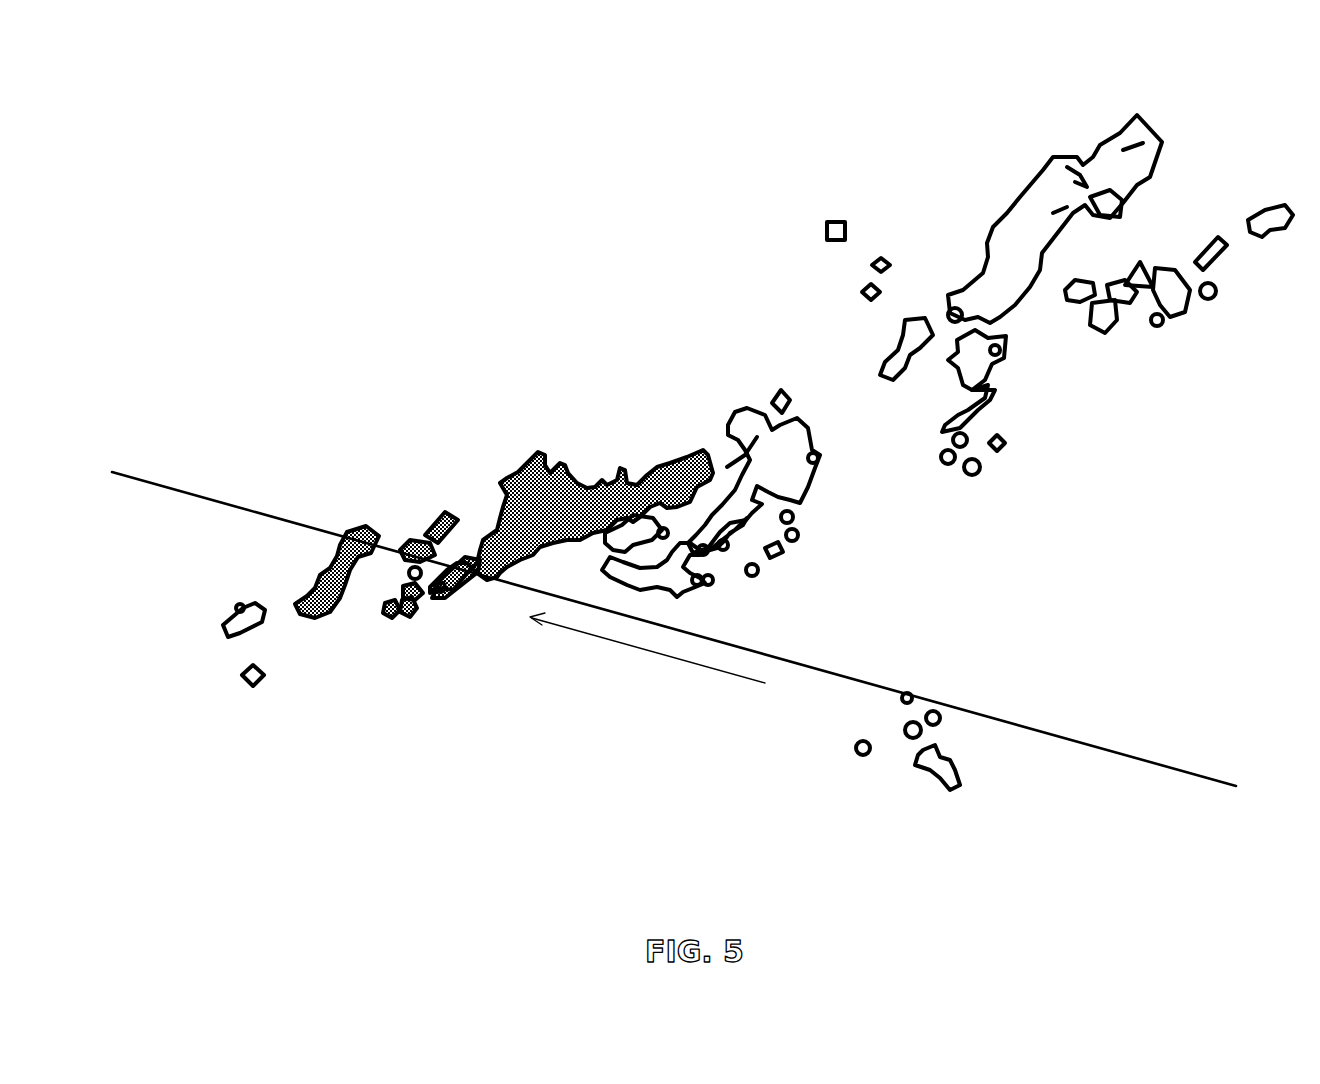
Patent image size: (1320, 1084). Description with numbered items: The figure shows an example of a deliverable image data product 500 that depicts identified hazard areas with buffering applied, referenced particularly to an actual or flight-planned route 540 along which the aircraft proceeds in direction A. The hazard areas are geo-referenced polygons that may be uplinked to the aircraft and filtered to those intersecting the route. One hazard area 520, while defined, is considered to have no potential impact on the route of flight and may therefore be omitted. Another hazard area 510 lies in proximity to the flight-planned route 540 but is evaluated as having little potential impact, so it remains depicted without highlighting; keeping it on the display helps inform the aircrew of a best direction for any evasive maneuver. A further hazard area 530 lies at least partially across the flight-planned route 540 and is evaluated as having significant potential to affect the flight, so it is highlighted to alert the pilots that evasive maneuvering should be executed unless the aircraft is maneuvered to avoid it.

The image data product 500 is at (172, 66).
The hazard area 510 is at (737, 415).
The hazard area 520 is at (1022, 239).
The hazard area 530 is at (530, 462).
The flight-planned route 540 is at (1078, 735).
The direction A is at (647, 648).